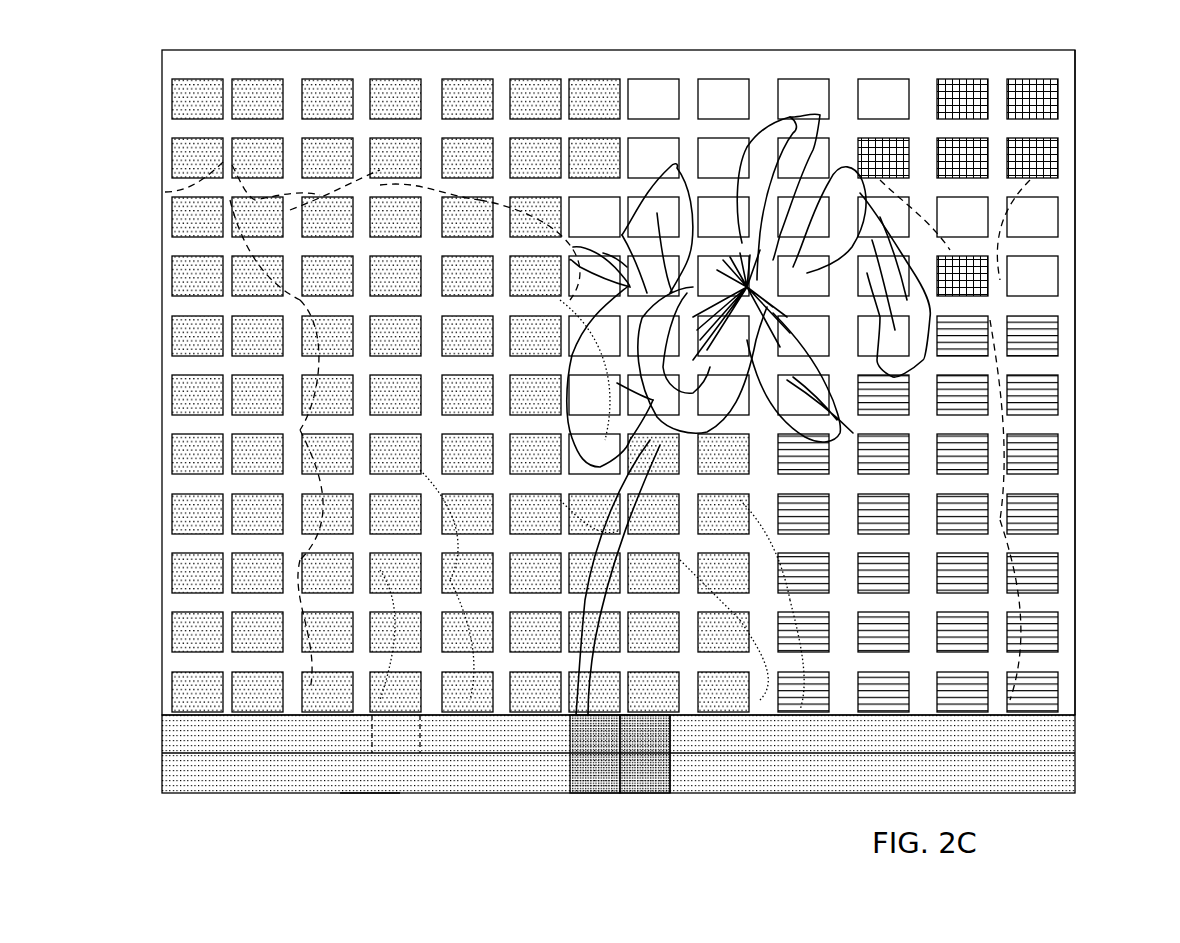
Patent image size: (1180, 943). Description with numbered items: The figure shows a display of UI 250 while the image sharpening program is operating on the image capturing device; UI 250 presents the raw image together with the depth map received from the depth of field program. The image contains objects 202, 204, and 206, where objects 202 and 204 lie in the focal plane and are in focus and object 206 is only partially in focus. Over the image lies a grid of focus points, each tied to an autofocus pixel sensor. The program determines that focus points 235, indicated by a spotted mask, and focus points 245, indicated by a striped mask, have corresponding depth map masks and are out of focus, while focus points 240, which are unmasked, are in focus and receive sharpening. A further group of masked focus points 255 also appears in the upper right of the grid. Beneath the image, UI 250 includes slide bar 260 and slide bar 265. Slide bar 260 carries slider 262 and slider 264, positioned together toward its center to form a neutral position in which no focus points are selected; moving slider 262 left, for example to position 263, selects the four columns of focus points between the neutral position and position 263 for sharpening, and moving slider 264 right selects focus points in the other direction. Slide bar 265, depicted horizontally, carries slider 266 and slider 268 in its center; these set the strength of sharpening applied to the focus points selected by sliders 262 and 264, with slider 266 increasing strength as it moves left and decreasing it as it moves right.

The object 202 is at (782, 60).
The object 204 is at (1075, 303).
The object 206 is at (1068, 66).
The focus points 235 is at (157, 260).
The focus points 240 is at (1058, 277).
The focus points 245 is at (1080, 306).
The UI 250 is at (538, 50).
The fourth pixel region 255 is at (1058, 100).
The slide bar 260 is at (666, 781).
The slider 262 is at (560, 781).
The position 263 is at (372, 739).
The slider 264 is at (670, 733).
The slide bar 265 is at (367, 795).
The slider 266 is at (588, 795).
The slider 268 is at (645, 795).